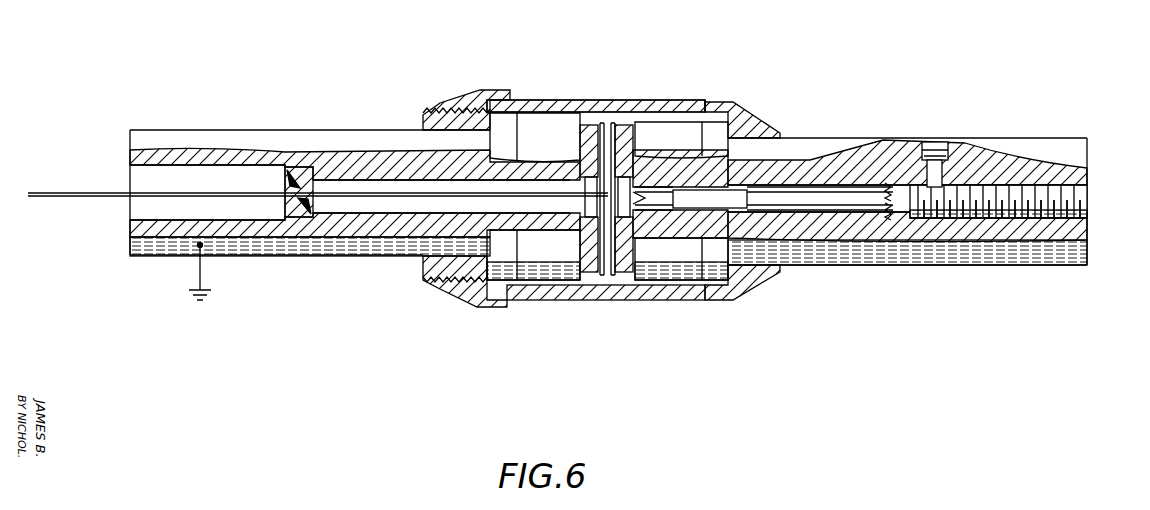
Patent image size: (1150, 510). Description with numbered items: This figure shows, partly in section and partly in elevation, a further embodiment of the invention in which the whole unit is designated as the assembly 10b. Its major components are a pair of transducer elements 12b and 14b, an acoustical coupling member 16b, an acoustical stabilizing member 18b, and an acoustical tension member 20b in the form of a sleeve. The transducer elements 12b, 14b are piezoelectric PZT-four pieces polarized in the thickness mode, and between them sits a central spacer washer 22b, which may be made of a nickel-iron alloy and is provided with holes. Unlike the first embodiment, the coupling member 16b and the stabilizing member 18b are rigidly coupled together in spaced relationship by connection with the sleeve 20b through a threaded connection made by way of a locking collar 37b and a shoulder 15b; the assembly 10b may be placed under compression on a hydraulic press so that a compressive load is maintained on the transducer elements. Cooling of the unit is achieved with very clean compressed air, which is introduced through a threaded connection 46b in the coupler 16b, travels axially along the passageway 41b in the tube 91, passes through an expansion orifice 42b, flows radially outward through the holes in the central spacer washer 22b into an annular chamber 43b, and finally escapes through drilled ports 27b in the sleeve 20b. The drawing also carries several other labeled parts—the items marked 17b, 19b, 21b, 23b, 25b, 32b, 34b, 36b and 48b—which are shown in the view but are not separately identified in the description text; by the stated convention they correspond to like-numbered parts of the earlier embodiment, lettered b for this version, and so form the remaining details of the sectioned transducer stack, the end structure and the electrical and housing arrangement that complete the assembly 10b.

The assembly 10b is at (450, 325).
The transducer element 12b is at (598, 125).
The transducer element 14b is at (625, 268).
The shoulder 15b is at (774, 126).
The acoustical coupling member 16b is at (1030, 138).
The inner tube member 17b is at (660, 133).
The acoustical stabilizing member 18b is at (282, 130).
The end face 19b is at (1088, 162).
The acoustical tension member 20b is at (460, 92).
The insulating block 21b is at (588, 268).
The central spacer washer 22b is at (616, 124).
The end face 23b is at (130, 140).
The sleeve 25b is at (515, 100).
The drilled ports 27b is at (520, 103).
The center conductor wire 32b is at (52, 190).
The ground connection 34b is at (201, 268).
The bore 36b is at (135, 214).
The locking collar 37b is at (421, 276).
The passageway 41b is at (848, 212).
The expansion orifice 42b is at (650, 194).
The annular chamber 43b is at (652, 295).
The threaded connection 46b is at (937, 142).
The ribbed terminal 48b is at (1070, 207).
The tube 91 is at (765, 186).